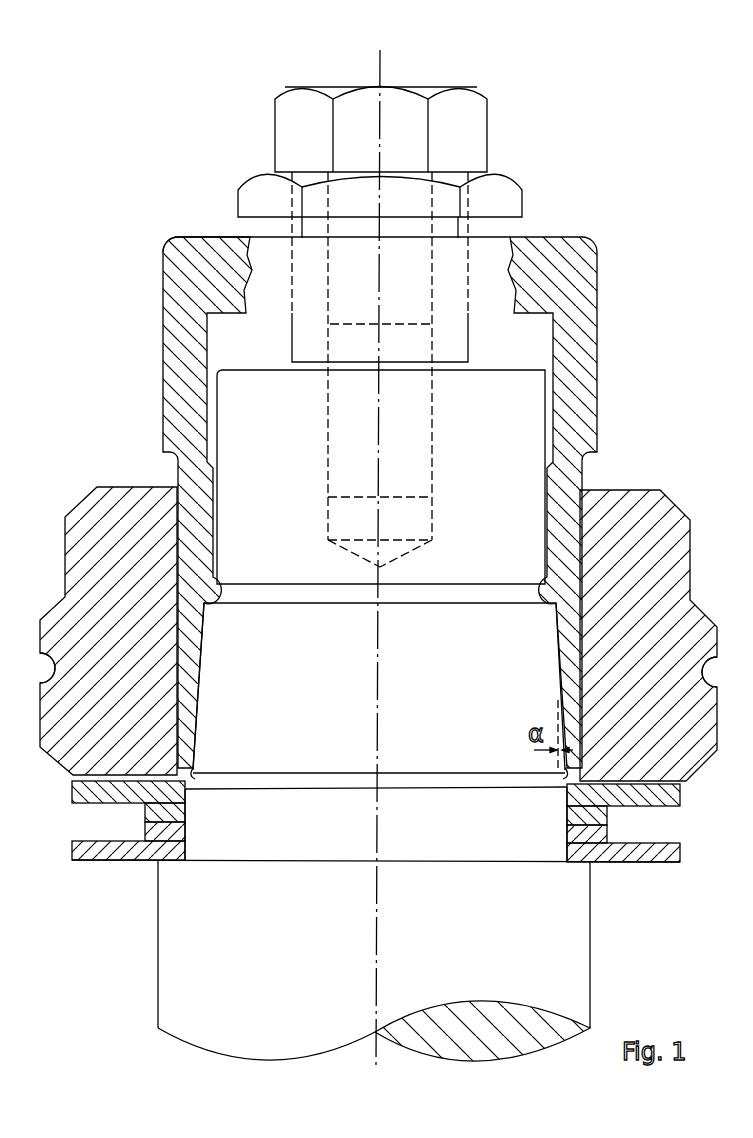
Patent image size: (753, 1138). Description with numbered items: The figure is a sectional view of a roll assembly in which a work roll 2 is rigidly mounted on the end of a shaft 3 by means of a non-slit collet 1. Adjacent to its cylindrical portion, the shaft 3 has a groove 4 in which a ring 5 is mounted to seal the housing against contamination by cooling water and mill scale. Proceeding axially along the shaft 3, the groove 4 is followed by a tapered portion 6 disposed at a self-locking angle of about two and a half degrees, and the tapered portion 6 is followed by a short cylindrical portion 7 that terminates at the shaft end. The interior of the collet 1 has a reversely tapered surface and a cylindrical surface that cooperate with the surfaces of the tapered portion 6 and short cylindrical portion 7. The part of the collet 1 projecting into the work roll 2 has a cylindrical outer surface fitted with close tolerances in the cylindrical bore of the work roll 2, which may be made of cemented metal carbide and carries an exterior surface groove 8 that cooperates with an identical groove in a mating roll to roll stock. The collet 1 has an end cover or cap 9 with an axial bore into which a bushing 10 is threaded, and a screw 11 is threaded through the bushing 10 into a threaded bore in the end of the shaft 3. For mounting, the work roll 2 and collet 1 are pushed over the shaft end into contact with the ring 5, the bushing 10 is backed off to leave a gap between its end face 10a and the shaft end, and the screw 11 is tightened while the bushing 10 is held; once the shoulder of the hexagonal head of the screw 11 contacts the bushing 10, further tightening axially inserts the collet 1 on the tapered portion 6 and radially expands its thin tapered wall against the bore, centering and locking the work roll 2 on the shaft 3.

The non-slit collet 1 is at (583, 410).
The work roll 2 is at (647, 540).
The shaft 3 is at (522, 945).
The groove 4 is at (510, 837).
The ring 5 is at (115, 862).
The tapered portion 6 is at (252, 695).
The short cylindrical portion 7 is at (247, 403).
The exterior surface groove 8 is at (52, 617).
The end cover or cap 9 is at (172, 237).
The bushing 10 is at (250, 188).
The end face of bushing 10a is at (403, 362).
The screw 11 is at (299, 108).